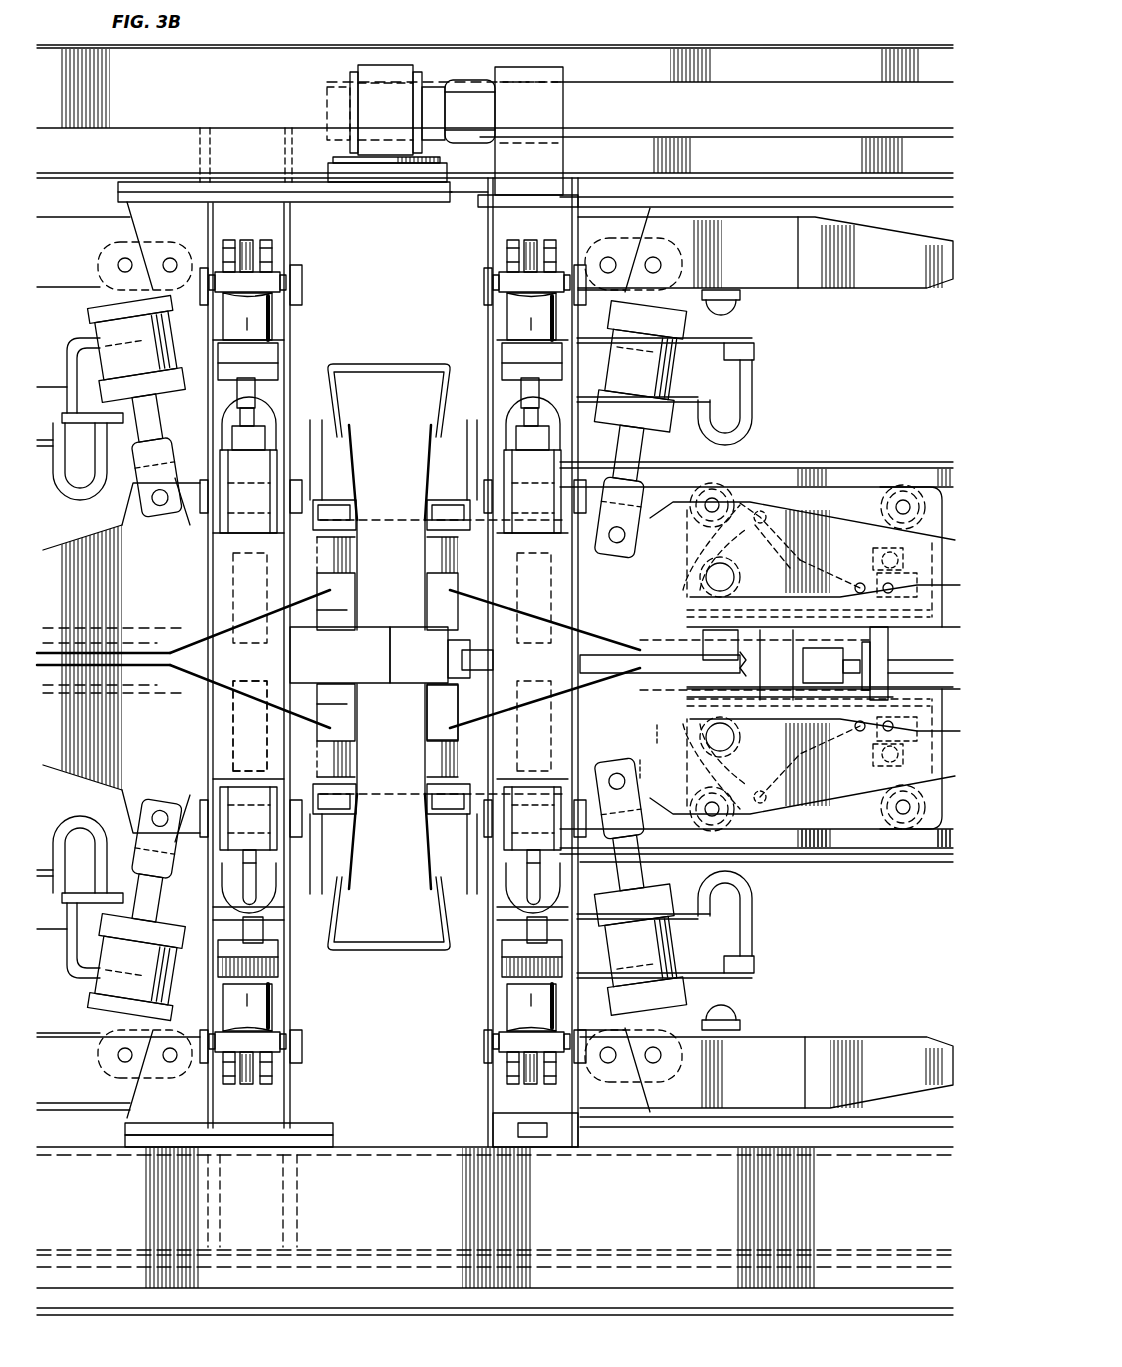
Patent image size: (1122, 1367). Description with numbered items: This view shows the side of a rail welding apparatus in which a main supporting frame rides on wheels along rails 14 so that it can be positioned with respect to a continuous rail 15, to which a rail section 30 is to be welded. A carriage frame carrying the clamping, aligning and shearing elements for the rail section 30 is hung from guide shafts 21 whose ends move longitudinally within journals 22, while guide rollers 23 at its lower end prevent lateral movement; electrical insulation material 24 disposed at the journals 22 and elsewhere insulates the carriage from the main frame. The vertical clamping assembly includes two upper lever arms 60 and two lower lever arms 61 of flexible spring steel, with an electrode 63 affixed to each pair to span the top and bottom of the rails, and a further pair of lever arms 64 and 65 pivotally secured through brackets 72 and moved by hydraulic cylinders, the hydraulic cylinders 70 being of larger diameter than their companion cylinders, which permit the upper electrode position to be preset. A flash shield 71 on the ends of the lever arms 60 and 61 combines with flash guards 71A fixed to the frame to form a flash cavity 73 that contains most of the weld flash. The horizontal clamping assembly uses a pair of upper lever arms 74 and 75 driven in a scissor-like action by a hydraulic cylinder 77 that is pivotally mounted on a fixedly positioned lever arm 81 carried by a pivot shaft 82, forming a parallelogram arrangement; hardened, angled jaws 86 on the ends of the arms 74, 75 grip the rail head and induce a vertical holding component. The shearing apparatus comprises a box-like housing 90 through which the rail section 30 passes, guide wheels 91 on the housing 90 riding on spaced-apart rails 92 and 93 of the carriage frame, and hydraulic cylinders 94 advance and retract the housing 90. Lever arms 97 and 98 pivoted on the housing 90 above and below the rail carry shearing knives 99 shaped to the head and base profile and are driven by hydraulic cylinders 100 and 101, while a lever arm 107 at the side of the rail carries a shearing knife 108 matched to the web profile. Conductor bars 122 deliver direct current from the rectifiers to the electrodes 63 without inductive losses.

The rails 14 is at (402, 1250).
The continuous rail 15 is at (213, 655).
The guide shafts 21 is at (738, 80).
The journals 22 is at (393, 65).
The guide rollers 23 is at (545, 1135).
The electrical insulation material 24 is at (432, 185).
The rail section 30 is at (419, 655).
The upper lever arms 60 is at (805, 500).
The lower lever arms 61 is at (840, 855).
The electrode 63 is at (427, 600).
The lever arms 64 is at (893, 285).
The lever arms 65 is at (865, 1037).
The hydraulic cylinders 70 is at (92, 320).
The flash shield 71 is at (428, 472).
The flash guards 71A is at (408, 368).
The brackets 72 is at (172, 215).
The flash cavity 73 is at (390, 432).
The upper lever arm 74 is at (238, 722).
The upper lever arm 75 is at (218, 578).
The hydraulic cylinder 77 is at (265, 320).
The lever arm 81 is at (248, 240).
The pivot shaft 82 is at (262, 278).
The jaws 86 is at (230, 632).
The housing 90 is at (830, 495).
The guide wheels 91 is at (725, 490).
The rail 92 is at (920, 480).
The rail 93 is at (788, 862).
The hydraulic cylinders 94 is at (766, 663).
The lever arm 97 is at (680, 575).
The lever arm 98 is at (628, 735).
The shearing knives 99 is at (458, 612).
The hydraulic cylinder 100 is at (826, 540).
The hydraulic cylinder 101 is at (800, 738).
The lever arm 107 is at (660, 685).
The shearing knives 108 is at (430, 715).
The conductor bars 122 is at (400, 345).